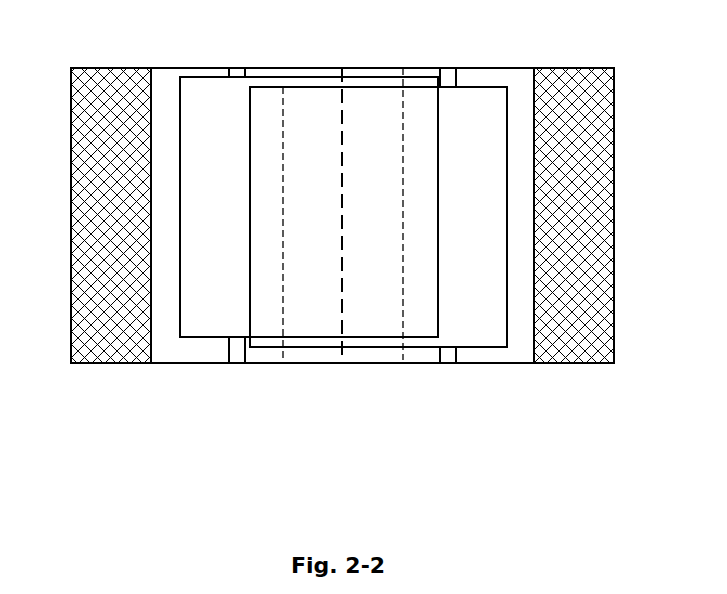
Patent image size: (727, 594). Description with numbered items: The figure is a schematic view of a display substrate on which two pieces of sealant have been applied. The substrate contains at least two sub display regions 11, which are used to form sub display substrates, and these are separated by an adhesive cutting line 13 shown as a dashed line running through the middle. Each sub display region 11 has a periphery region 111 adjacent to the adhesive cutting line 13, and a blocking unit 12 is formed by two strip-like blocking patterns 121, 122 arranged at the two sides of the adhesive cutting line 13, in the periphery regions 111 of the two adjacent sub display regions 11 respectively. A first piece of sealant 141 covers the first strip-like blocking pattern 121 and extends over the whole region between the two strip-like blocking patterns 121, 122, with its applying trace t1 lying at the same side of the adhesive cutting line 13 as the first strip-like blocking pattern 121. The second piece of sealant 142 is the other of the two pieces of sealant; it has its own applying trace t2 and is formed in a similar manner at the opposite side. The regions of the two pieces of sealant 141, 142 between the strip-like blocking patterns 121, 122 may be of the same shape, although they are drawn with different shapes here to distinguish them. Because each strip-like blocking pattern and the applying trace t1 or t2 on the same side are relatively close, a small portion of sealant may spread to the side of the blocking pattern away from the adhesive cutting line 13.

The sub display region 11 is at (342, 55).
The periphery region 111 is at (534, 365).
The blocking unit 12 is at (342, 297).
The first strip-like blocking pattern 121 is at (228, 351).
The second strip-like blocking pattern 122 is at (474, 259).
The adhesive cutting line 13 is at (342, 260).
The first piece of sealant 141 is at (180, 225).
The second piece of sealant 142 is at (507, 210).
The applying trace of first piece of sealant t1 is at (283, 132).
The applying trace of second piece of sealant t2 is at (403, 183).